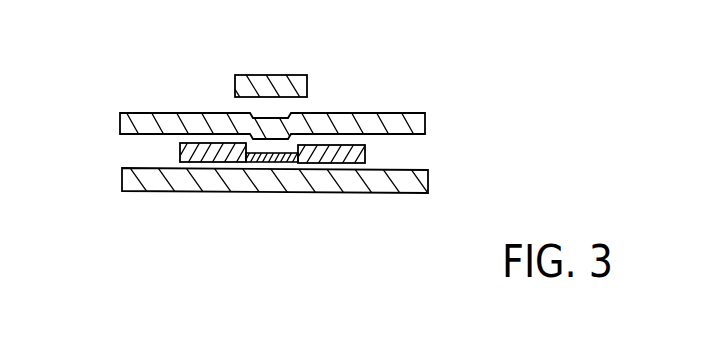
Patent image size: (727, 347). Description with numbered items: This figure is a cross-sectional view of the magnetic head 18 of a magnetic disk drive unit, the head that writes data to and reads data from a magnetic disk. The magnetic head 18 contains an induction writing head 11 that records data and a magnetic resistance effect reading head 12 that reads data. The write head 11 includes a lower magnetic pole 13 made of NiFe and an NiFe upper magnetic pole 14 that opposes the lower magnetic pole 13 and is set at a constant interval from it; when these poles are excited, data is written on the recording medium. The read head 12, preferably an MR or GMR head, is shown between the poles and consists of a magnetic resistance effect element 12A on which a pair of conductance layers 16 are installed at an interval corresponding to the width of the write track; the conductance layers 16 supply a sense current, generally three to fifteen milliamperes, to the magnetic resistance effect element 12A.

The induction writing head 11 is at (222, 79).
The magnetic resistance effect reading head 12 is at (160, 151).
The magnetic resistance effect element 12A is at (308, 150).
The lower magnetic pole 13 is at (391, 113).
The upper magnetic pole 14 is at (283, 74).
The conductance layers 16 is at (366, 148).
The magnetic head 18 is at (510, 165).